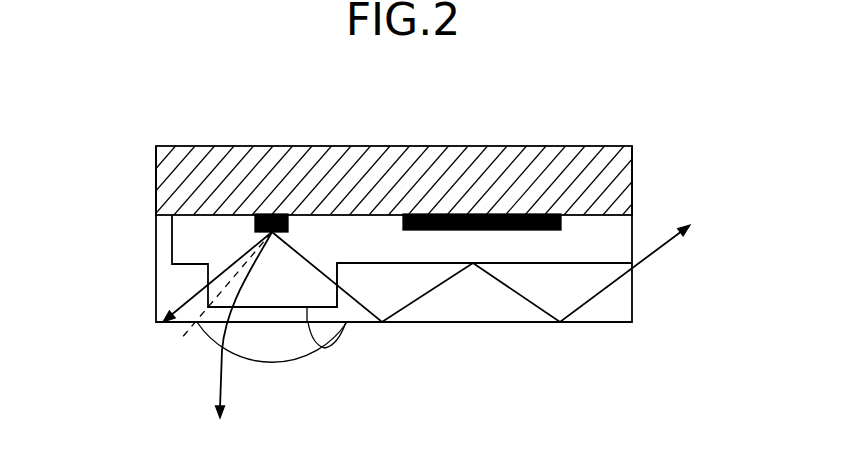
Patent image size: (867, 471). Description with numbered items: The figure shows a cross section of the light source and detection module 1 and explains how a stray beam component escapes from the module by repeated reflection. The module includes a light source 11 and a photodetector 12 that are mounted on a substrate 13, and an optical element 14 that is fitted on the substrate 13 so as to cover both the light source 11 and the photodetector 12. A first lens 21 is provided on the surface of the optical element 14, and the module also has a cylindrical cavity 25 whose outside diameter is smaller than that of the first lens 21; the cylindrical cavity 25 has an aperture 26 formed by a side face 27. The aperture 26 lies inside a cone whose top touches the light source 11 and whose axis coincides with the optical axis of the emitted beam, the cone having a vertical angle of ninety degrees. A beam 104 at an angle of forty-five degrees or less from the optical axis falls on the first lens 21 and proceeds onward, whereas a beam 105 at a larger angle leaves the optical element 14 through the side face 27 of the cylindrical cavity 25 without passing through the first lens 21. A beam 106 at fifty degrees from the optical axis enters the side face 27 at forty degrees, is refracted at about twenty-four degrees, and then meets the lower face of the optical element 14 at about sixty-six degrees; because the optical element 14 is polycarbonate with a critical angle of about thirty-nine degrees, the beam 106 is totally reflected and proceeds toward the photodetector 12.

The light source and detection module 1 is at (155, 172).
The light source 11 is at (271, 213).
The photodetector 12 is at (561, 223).
The substrate 13 is at (463, 195).
The optical element 14 is at (167, 273).
The first lens 21 is at (278, 352).
The cylindrical cavity 25 is at (307, 278).
The aperture 26 is at (324, 350).
The side face 27 is at (338, 278).
The beam 104 is at (217, 388).
The beam 105 is at (183, 307).
The beam 106 is at (660, 257).